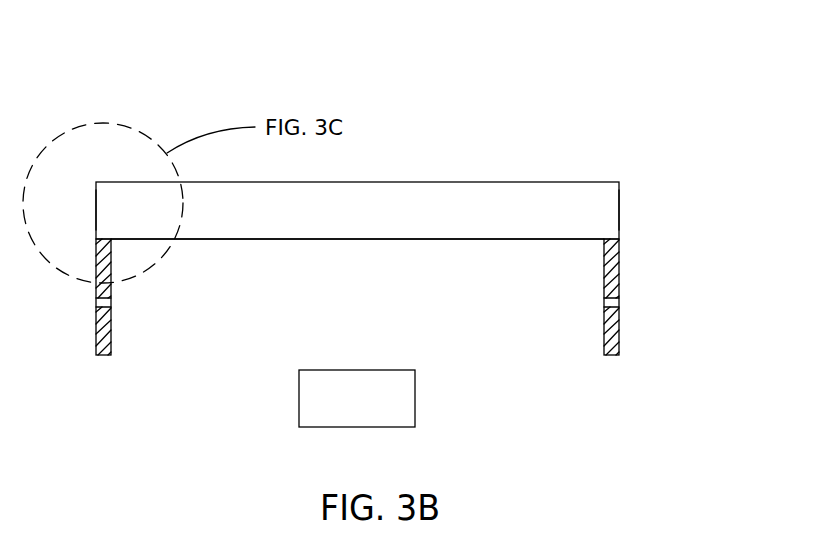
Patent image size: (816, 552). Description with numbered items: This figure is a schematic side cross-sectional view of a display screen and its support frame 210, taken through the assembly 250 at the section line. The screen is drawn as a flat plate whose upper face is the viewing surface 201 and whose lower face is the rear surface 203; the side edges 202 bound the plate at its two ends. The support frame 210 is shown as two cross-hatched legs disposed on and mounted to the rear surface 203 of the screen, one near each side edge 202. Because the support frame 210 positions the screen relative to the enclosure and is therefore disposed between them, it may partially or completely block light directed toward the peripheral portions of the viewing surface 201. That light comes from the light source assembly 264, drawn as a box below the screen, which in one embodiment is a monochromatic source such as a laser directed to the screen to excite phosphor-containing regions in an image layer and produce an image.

The sensor assembly 250 is at (166, 84).
The viewing surface 201 is at (568, 182).
The substrate side edge 202 is at (96, 211).
The rear surface 203 is at (358, 241).
The support frame 210 is at (111, 332).
The light source assembly 264 is at (376, 405).